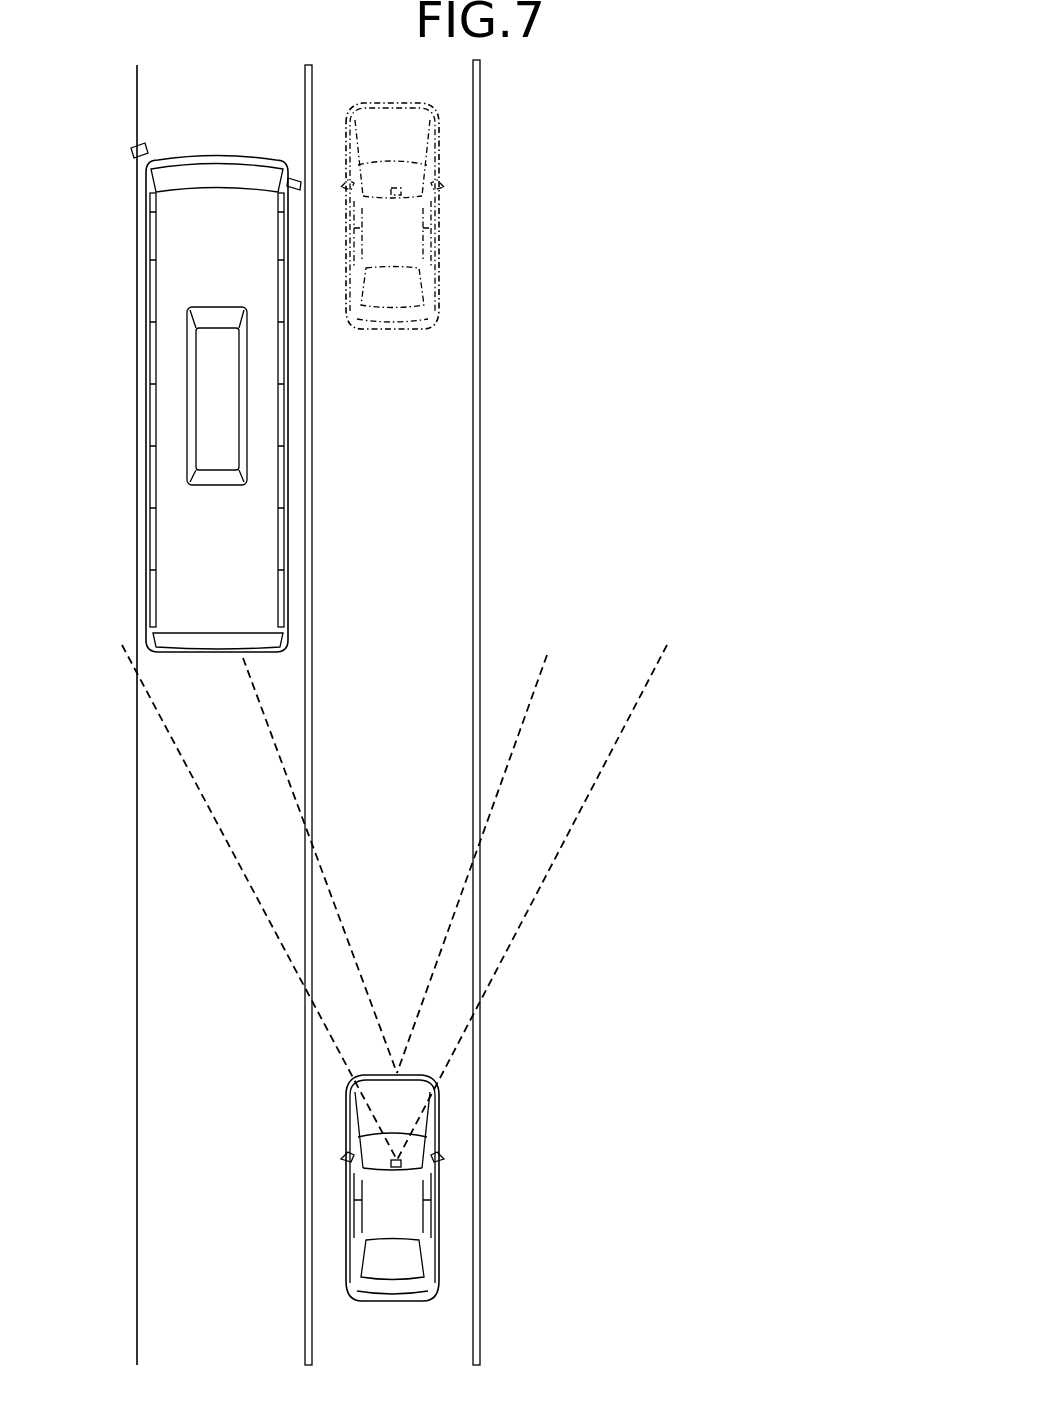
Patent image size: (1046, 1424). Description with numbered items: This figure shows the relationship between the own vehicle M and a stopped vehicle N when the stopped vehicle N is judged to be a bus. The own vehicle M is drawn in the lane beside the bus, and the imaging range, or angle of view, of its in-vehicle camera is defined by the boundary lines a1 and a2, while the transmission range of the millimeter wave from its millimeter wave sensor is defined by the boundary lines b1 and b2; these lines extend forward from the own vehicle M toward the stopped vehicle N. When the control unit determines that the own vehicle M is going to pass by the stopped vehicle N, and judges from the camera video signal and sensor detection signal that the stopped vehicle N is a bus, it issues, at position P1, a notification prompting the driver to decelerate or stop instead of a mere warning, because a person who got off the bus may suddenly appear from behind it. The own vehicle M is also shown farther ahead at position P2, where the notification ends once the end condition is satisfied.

The stopped vehicle N is at (146, 403).
The own vehicle M is at (393, 330).
The imaging range boundary a1 is at (553, 870).
The imaging range boundary a2 is at (238, 870).
The millimeter wave transmission range boundary b1 is at (521, 730).
The millimeter wave transmission range boundary b2 is at (266, 730).
The notification start position P1 is at (435, 1074).
The notification end position P2 is at (400, 100).